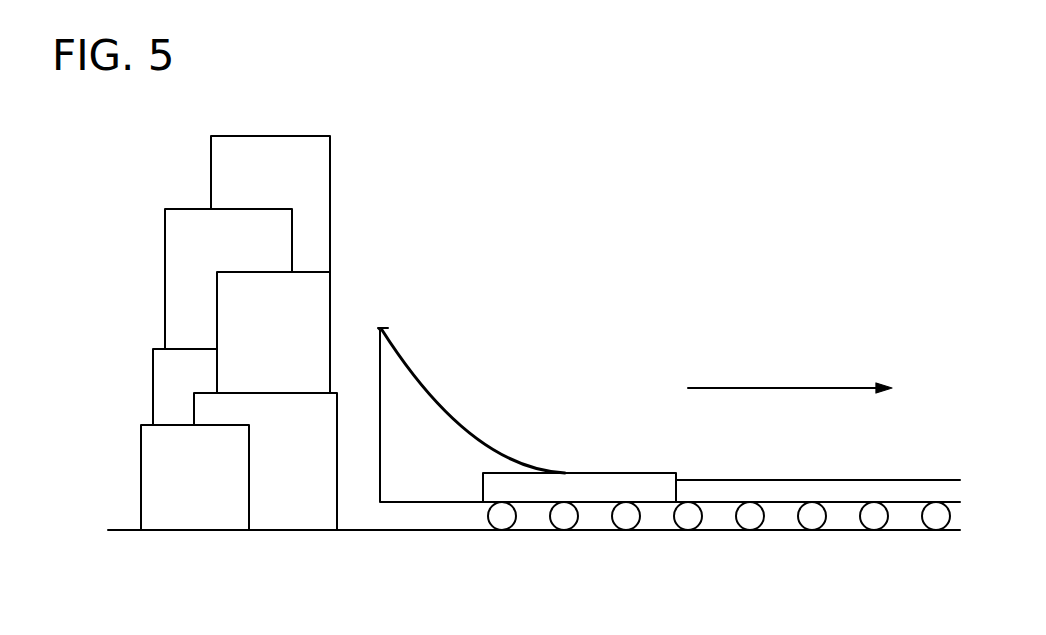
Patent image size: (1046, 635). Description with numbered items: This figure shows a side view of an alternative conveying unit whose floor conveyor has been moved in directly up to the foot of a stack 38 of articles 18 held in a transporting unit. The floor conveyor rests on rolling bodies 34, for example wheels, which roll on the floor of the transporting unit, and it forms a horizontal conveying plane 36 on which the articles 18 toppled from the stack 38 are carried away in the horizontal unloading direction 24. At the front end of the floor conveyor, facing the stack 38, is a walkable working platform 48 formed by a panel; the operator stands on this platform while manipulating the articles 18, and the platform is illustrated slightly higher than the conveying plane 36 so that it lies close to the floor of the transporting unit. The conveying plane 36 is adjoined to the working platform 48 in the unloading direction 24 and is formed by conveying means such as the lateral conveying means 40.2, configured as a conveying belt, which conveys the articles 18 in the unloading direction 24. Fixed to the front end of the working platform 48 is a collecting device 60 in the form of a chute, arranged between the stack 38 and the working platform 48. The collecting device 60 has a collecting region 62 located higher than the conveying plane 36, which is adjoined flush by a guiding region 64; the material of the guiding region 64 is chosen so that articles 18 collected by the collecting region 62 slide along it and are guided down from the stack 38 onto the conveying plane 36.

The stack 38 is at (273, 299).
The articles 18 is at (318, 196).
The collecting region 62 is at (412, 348).
The collecting device 60 is at (471, 386).
The guiding region 64 is at (488, 430).
The working platform 48 is at (625, 488).
The lateral conveying means 40.2 is at (818, 446).
The conveying plane 36 is at (815, 466).
The rolling bodies 34 is at (564, 518).
The unloading direction 24 is at (778, 388).